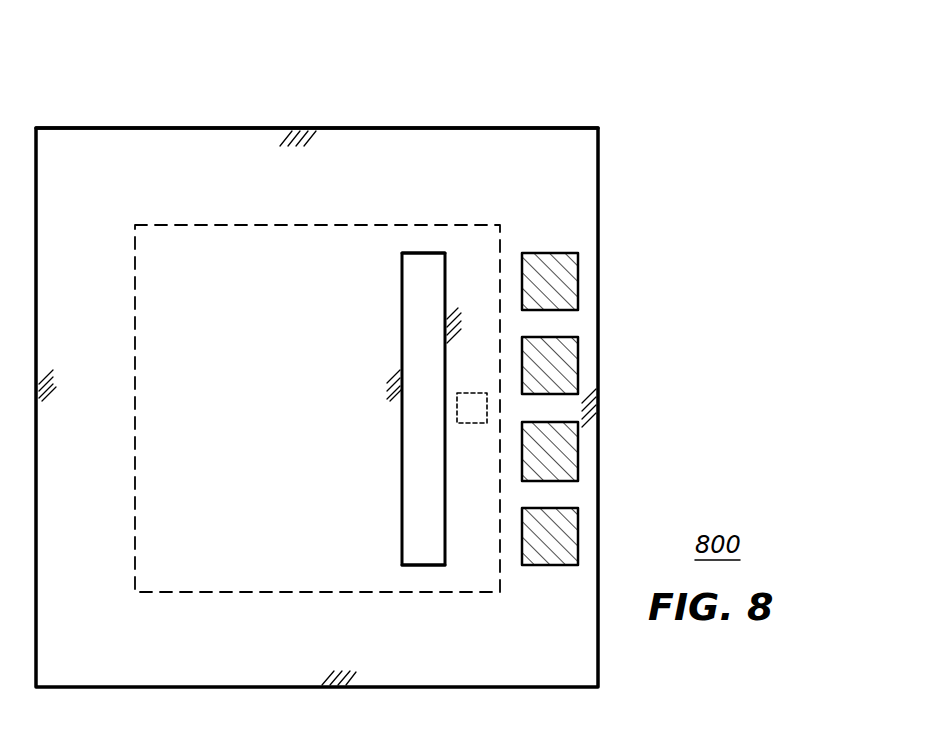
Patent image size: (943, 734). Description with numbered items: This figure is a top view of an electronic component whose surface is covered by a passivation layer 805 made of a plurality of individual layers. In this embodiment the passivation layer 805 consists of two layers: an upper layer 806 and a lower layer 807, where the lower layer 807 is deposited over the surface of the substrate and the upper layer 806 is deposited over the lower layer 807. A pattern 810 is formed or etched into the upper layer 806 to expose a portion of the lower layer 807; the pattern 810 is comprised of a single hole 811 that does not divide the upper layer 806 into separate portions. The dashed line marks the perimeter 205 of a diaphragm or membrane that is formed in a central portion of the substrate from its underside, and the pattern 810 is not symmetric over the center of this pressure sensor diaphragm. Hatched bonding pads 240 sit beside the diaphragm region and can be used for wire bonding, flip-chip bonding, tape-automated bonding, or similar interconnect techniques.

The passivation layer 805 is at (98, 114).
The upper layer 806 is at (157, 128).
The perimeter of diaphragm 205 is at (285, 226).
The lower layer 807 is at (405, 297).
The pattern 810 is at (385, 433).
The single hole 811 is at (407, 539).
The bonding pads 240 is at (551, 574).